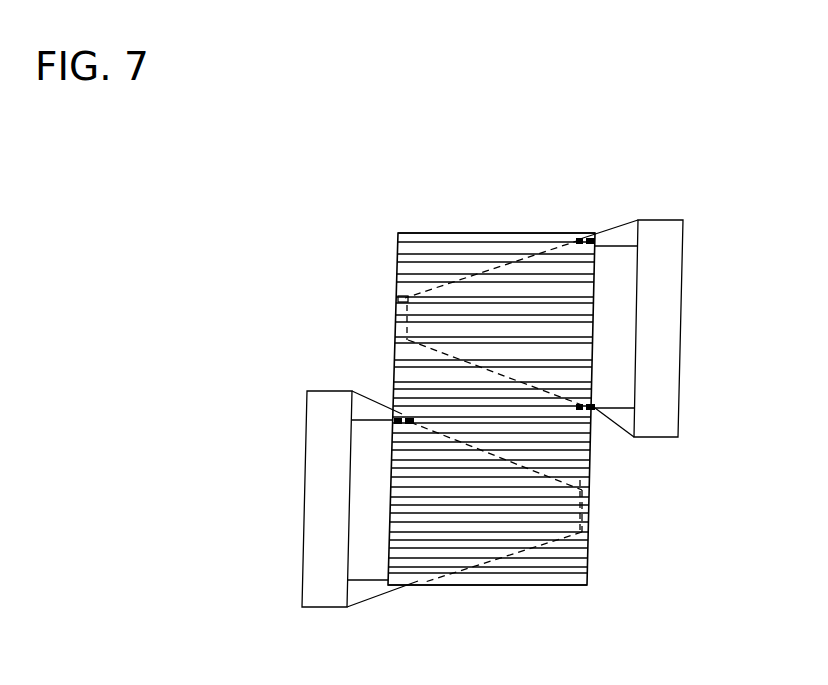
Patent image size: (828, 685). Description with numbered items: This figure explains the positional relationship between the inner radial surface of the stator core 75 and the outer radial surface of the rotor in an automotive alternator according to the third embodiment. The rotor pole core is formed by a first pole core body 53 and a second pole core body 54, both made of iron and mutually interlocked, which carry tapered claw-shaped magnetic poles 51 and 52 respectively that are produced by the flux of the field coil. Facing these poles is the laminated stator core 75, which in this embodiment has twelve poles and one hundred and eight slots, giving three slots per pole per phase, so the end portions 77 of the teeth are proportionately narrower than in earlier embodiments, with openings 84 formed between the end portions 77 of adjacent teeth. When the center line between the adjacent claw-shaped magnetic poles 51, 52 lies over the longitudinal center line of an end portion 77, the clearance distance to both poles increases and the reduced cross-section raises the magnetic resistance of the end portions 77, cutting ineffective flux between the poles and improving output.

The claw-shaped magnetic pole 51 is at (538, 264).
The claw-shaped magnetic pole 52 is at (462, 540).
The first pole core body 53 is at (658, 230).
The second pole core body 54 is at (312, 523).
The stator core 75 is at (588, 590).
The end portion 77 is at (398, 262).
The opening 84 is at (398, 300).